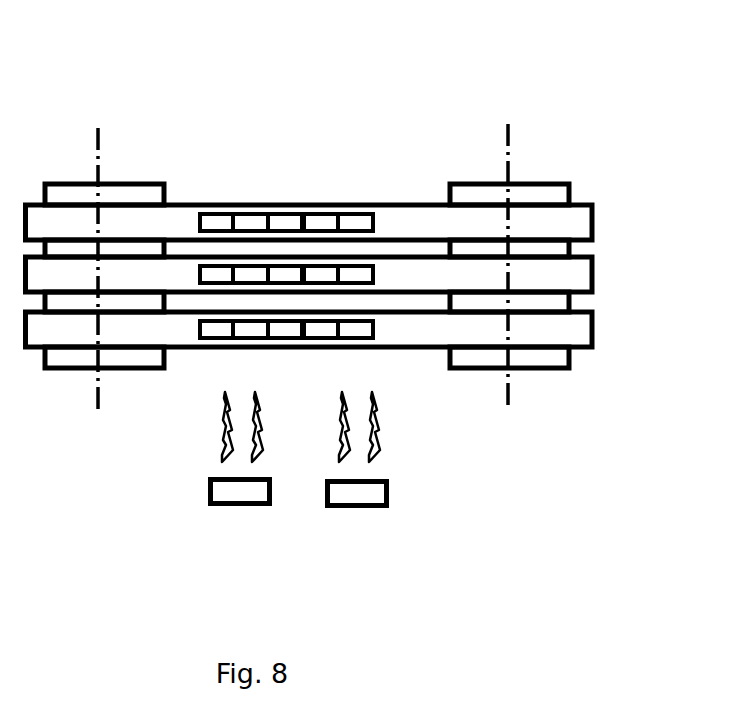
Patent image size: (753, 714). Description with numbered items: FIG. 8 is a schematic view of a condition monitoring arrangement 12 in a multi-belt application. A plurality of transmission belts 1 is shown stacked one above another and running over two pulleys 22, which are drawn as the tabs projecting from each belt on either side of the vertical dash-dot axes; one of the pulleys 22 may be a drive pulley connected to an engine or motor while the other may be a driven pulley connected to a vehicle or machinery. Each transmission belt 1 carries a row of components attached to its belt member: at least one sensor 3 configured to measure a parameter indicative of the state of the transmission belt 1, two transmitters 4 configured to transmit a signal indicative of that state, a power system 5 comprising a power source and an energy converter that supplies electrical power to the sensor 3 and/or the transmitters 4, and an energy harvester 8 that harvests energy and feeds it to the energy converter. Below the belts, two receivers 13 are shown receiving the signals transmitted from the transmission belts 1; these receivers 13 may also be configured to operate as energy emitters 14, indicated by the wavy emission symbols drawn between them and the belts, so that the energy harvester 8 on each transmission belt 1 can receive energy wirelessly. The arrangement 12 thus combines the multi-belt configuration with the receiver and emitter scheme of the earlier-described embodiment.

The transmission belt 1 is at (572, 218).
The sensor 3 is at (215, 222).
The transmitter 4 is at (252, 222).
The power system 5 is at (322, 220).
The energy harvester 8 is at (360, 225).
The condition monitoring arrangement 12 is at (493, 88).
The receiver 13 is at (245, 495).
The energy emitter 14 is at (360, 497).
The pulley 22 is at (56, 198).